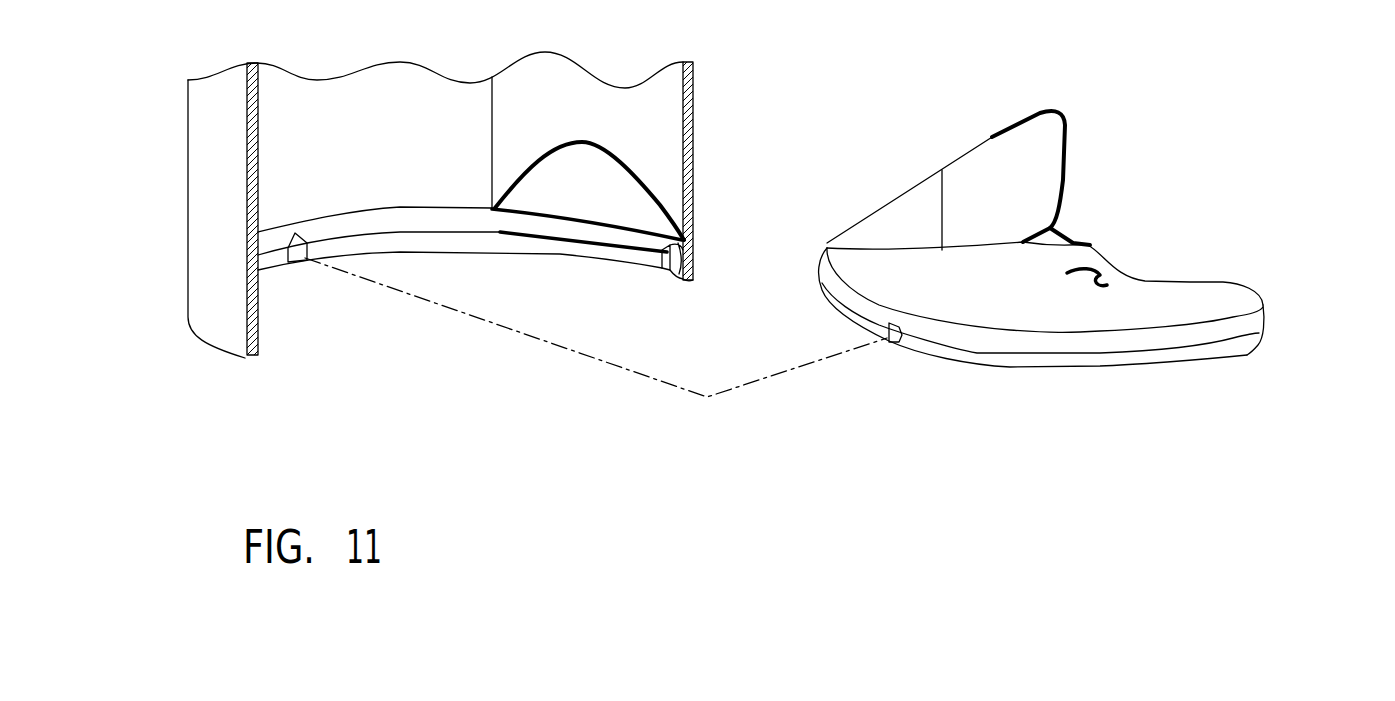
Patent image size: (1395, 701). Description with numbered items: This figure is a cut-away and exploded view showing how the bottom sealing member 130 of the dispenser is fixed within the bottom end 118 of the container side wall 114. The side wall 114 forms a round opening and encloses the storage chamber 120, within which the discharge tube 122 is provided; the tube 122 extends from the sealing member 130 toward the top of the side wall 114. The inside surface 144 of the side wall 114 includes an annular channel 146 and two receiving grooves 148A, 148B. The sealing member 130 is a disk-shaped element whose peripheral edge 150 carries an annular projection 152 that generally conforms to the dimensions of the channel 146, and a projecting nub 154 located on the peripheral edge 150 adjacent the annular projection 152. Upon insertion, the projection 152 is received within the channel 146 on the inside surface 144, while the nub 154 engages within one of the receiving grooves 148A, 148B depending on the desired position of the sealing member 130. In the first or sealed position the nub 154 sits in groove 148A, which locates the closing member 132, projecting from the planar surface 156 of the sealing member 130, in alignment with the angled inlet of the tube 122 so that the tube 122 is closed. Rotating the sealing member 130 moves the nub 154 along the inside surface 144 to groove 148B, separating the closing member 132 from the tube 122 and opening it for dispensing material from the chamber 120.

The side wall 114 is at (208, 242).
The bottom end 118 is at (224, 338).
The storage chamber 120 is at (660, 114).
The discharge tube 122 is at (648, 190).
The inside surface 144 is at (400, 243).
The annular channel 146 is at (445, 225).
The receiving groove 148A is at (295, 263).
The receiving groove 148B is at (667, 272).
The sealing member 130 is at (1247, 304).
The closing member 132 is at (972, 195).
The peripheral edge 150 is at (1133, 363).
The annular projection 152 is at (1240, 332).
The projecting nub 154 is at (897, 345).
The planar surface 156 is at (1107, 270).